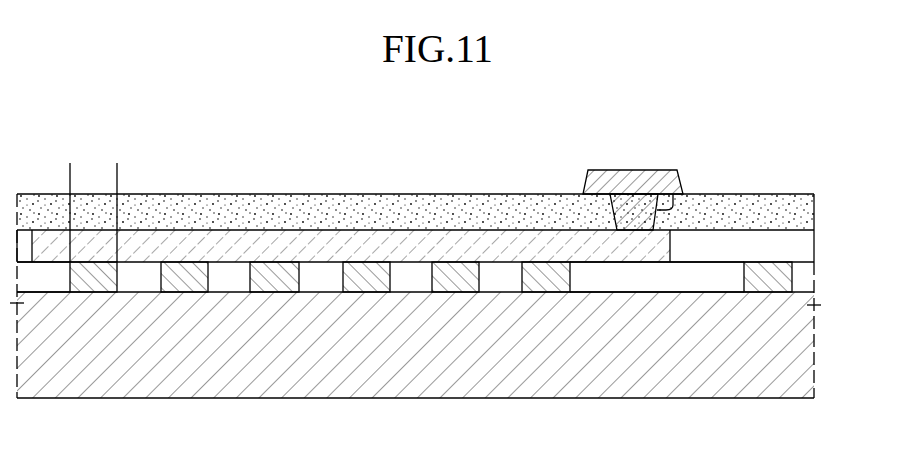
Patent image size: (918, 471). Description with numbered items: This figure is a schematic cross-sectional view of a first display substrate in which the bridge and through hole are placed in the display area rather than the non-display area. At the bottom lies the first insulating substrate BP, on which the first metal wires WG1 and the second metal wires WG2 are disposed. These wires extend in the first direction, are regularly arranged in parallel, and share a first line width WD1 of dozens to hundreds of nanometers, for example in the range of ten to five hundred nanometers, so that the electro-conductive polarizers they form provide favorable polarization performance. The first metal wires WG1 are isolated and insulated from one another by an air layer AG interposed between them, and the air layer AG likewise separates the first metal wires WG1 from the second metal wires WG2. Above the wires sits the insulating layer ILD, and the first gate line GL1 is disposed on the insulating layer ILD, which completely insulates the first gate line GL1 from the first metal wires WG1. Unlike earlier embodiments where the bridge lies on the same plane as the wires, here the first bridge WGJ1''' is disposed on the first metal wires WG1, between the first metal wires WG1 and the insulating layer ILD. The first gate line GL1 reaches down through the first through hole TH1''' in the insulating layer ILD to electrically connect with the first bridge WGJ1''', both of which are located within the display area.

The first line width WD1 is at (116, 171).
The first bridge WGJ1''' is at (415, 188).
The first gate line GL1 is at (628, 177).
The first through hole TH1''' is at (666, 172).
The insulating layer ILD is at (810, 212).
The first insulating substrate BP is at (808, 350).
The air layer AG is at (42, 282).
The first metal wires WG1 is at (96, 282).
The second metal wires WG2 is at (769, 283).